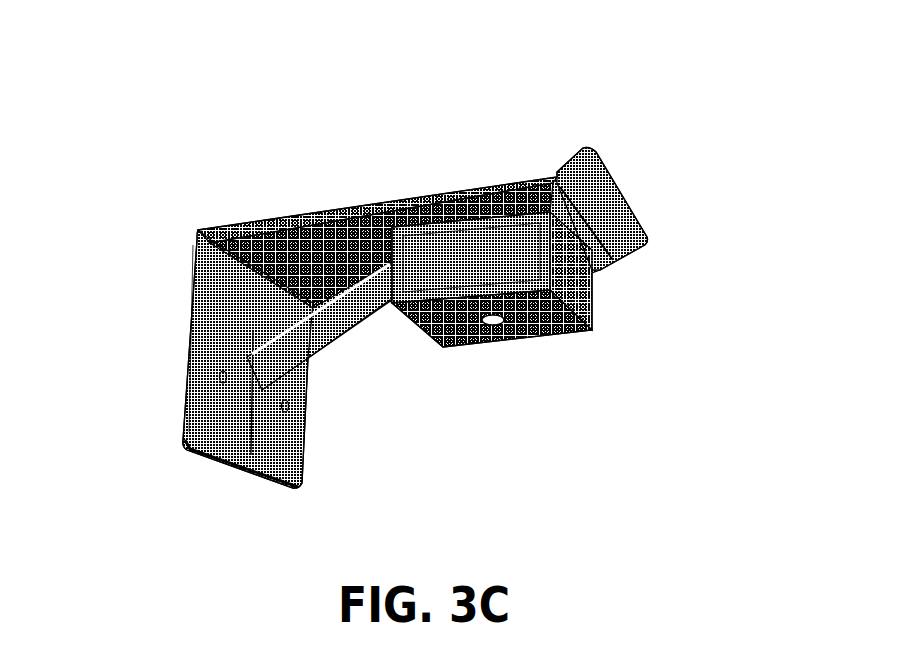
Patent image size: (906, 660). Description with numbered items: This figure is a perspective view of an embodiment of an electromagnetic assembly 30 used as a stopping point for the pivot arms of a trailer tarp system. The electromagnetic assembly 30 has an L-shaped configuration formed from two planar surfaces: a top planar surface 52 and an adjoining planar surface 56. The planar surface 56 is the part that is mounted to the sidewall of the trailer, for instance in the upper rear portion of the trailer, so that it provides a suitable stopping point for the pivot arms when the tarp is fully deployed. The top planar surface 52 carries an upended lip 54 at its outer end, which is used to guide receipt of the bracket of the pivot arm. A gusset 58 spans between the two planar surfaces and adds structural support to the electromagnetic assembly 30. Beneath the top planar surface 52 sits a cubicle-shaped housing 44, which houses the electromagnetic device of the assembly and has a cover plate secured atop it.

The electromagnetic assembly 30 is at (668, 123).
The housing 44 is at (567, 280).
The top planar surface 52 is at (293, 195).
The upended lip 54 is at (647, 227).
The planar surface 56 is at (158, 323).
The gusset 58 is at (340, 333).